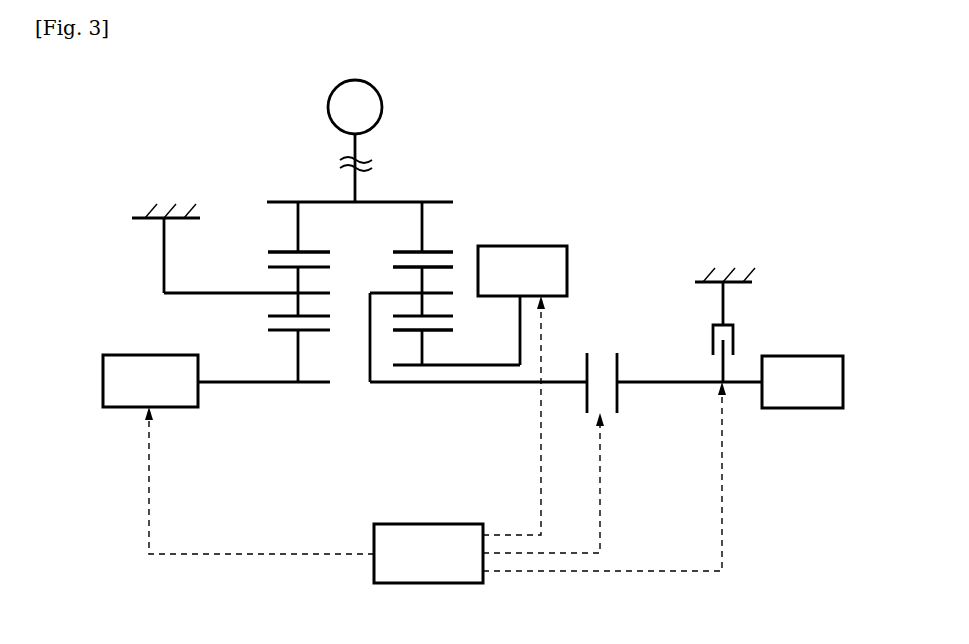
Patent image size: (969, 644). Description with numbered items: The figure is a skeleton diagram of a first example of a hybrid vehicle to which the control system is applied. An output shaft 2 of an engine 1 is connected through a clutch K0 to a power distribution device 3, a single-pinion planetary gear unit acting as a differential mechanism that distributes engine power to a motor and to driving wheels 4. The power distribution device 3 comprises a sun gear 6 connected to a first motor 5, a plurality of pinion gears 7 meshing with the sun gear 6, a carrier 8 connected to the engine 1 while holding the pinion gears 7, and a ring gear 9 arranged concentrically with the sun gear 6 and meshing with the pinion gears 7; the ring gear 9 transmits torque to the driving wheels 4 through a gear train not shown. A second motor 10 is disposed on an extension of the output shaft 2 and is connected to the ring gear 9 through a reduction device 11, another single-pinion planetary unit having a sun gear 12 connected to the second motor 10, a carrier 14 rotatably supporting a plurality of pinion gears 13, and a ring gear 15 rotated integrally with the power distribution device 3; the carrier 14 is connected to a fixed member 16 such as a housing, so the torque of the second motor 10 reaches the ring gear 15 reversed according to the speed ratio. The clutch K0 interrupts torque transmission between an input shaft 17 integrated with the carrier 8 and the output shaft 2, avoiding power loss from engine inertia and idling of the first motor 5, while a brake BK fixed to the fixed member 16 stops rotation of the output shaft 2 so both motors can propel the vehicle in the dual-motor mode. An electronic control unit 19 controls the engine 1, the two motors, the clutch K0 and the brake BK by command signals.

The engine 1 is at (796, 356).
The output shaft 2 is at (665, 383).
The power distribution device 3 is at (466, 211).
The driving wheels 4 is at (383, 107).
The first motor 5 is at (531, 246).
The sun gear 6 is at (437, 331).
The pinion gears 7 is at (393, 265).
The carrier 8 is at (370, 353).
The ring gear 9 is at (436, 250).
The second motor 10 is at (168, 408).
The reduction device 11 is at (251, 214).
The sun gear 12 is at (274, 332).
The pinion gears 13 is at (322, 315).
The carrier 14 is at (216, 292).
The ring gear 15 is at (314, 250).
The fixed member 16 is at (165, 208).
The input shaft 17 is at (488, 383).
The electronic control unit 19 is at (436, 584).
The clutch K0 is at (597, 340).
The brake BK is at (705, 335).